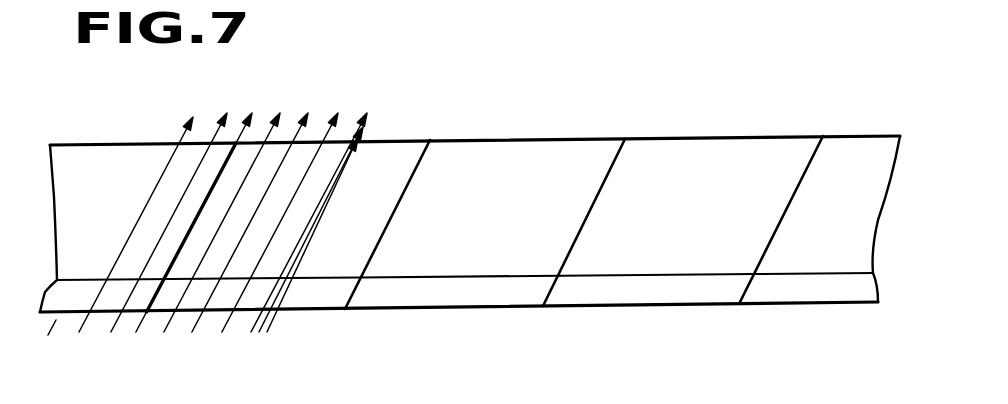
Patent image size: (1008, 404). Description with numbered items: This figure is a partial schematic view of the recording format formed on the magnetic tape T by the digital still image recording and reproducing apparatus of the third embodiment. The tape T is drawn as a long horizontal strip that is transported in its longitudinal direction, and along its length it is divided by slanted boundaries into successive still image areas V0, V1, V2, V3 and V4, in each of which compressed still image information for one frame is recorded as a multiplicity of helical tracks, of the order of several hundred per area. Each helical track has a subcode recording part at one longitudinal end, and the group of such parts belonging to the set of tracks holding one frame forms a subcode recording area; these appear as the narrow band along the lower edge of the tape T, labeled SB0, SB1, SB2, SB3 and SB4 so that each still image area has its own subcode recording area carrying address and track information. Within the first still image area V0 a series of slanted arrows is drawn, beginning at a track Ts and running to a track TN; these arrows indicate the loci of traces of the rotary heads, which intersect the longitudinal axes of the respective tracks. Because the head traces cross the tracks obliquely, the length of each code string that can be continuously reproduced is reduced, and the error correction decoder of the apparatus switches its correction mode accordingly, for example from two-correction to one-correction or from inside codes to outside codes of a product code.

The magnetic tape T is at (858, 203).
The still image area V0 is at (100, 163).
The still image area V1 is at (387, 160).
The still image area V2 is at (545, 158).
The still image area V3 is at (705, 157).
The still image area V4 is at (848, 150).
The track Ts is at (223, 127).
The track TN is at (318, 222).
The subcode recording area SB0 is at (78, 300).
The subcode recording area SB1 is at (297, 295).
The subcode recording area SB2 is at (449, 296).
The subcode recording area SB3 is at (627, 292).
The subcode recording area SB4 is at (807, 290).